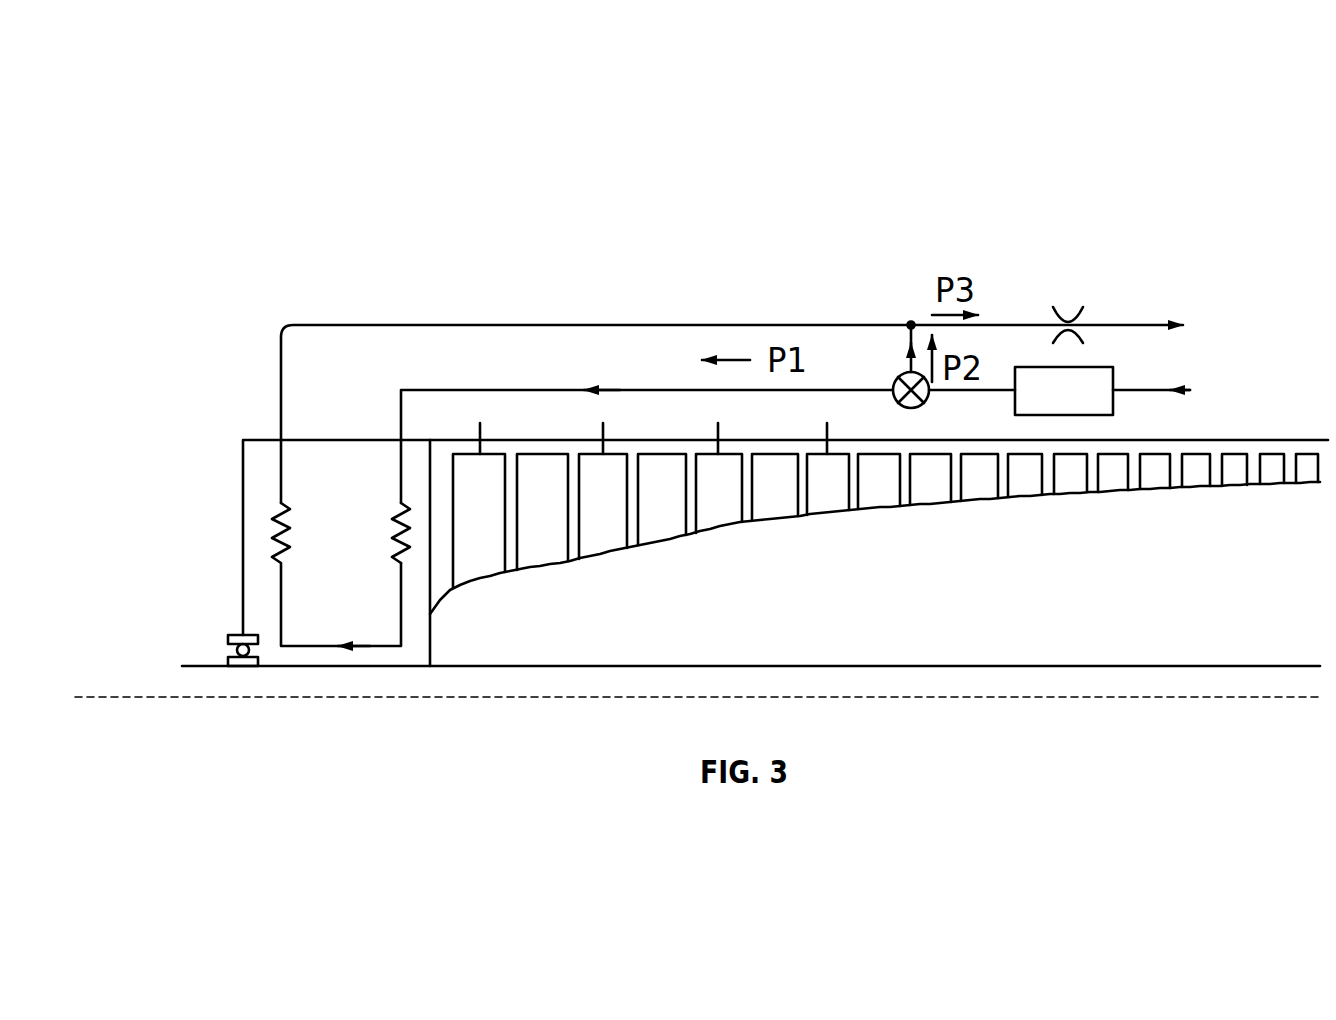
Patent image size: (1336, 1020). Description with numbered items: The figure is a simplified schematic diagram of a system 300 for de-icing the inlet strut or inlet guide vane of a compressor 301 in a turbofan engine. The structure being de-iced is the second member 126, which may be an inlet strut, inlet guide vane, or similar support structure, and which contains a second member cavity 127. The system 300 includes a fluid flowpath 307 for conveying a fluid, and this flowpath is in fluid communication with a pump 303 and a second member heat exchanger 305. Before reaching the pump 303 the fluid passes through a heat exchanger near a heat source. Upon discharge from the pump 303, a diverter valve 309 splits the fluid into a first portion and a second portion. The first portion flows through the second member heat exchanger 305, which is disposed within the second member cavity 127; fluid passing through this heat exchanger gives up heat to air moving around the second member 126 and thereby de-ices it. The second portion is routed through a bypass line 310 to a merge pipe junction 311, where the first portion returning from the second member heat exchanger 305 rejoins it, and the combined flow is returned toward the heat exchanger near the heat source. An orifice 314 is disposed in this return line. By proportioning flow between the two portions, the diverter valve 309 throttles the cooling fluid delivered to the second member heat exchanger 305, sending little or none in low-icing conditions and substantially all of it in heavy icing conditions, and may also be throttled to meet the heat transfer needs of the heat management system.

The system 300 is at (225, 126).
The compressor 301 is at (986, 553).
The second member 126 is at (434, 643).
The second member cavity 127 is at (265, 567).
The pump 303 is at (1102, 365).
The second member heat exchanger 305 is at (265, 508).
The fluid flowpath 307 is at (276, 329).
The diverter valve 309 is at (891, 380).
The bypass line 310 is at (904, 347).
The merge pipe junction 311 is at (911, 320).
The orifice 314 is at (1070, 307).